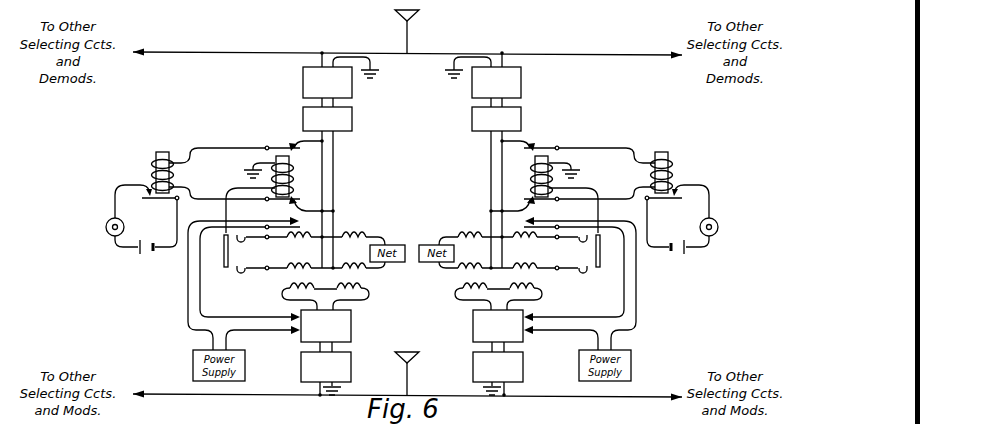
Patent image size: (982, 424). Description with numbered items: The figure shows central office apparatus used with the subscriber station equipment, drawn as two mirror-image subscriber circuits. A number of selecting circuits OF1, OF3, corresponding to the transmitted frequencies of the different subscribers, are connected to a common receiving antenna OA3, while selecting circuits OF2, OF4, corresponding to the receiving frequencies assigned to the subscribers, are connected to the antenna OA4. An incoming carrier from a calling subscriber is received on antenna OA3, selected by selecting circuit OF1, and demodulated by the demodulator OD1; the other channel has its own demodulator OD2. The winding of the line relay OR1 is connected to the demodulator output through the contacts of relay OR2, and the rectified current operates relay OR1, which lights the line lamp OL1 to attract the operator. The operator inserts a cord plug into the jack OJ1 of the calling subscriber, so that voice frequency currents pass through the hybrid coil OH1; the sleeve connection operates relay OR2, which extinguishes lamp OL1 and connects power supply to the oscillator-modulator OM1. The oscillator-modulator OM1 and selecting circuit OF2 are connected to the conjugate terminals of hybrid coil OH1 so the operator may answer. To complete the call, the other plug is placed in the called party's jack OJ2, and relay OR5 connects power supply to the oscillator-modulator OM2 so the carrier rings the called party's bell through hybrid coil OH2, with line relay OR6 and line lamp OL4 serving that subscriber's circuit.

The common antenna OA3 is at (409, 27).
The antenna OA4 is at (409, 368).
The selecting circuit OF1 is at (303, 82).
The selecting circuit OF3 is at (474, 82).
The demodulator OD1 is at (352, 120).
The demodulator OD2 is at (522, 120).
The line relay OR1 is at (166, 146).
The relay OR2 is at (294, 170).
The relay OR5 is at (532, 171).
The line relay OR6 is at (662, 152).
The line lamp OL1 is at (106, 228).
The line lamp OL4 is at (718, 230).
The hybrid coil OH1 is at (357, 248).
The hybrid coil OH2 is at (478, 248).
The jack OJ1 is at (228, 270).
The jack OJ2 is at (596, 270).
The oscillator-modulator OM1 is at (351, 327).
The oscillator-modulator OM2 is at (473, 327).
The selecting circuit OF2 is at (351, 370).
The selecting circuit OF4 is at (473, 380).